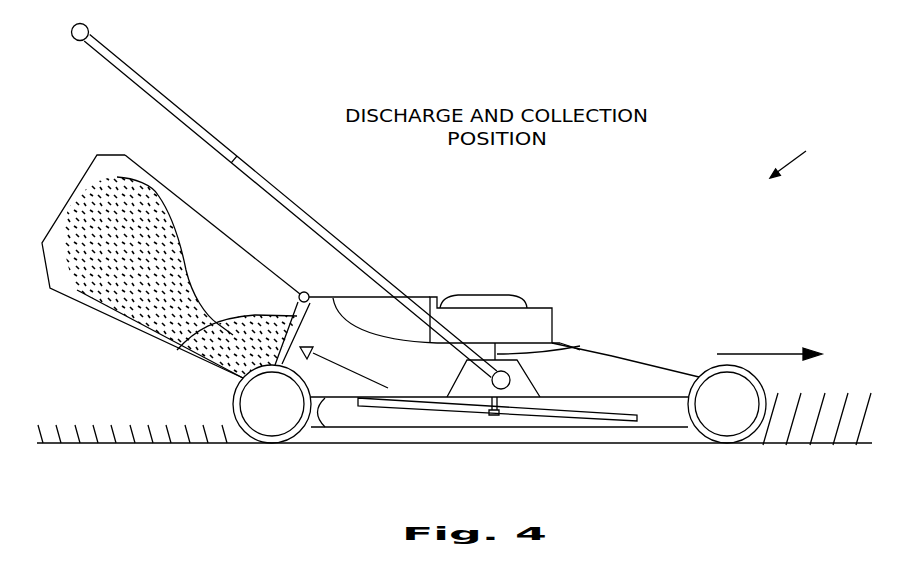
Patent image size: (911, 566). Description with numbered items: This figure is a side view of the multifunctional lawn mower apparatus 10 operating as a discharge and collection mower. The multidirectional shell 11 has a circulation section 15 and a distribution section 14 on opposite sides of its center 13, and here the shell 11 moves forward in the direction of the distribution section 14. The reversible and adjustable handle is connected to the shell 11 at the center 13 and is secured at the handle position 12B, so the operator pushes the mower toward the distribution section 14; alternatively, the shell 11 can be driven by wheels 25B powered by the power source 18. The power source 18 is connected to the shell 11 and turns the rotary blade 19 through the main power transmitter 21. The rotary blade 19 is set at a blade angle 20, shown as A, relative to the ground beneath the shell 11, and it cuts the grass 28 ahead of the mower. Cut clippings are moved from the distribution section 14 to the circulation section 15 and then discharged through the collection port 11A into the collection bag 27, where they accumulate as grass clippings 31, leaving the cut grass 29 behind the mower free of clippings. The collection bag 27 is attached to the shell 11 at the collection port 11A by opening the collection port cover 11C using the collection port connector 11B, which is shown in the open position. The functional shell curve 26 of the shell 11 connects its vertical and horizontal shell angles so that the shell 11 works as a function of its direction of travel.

The multifunctional lawn mower apparatus 10 is at (802, 156).
The multidirectional shell 11 is at (612, 356).
The collection port 11A is at (183, 349).
The collection port connector 11B is at (303, 292).
The collection port cover 11C is at (250, 253).
The handle position 12B is at (112, 52).
The center 13 is at (580, 376).
The distribution section 14 is at (586, 352).
The circulation section 15 is at (315, 337).
The power source 18 is at (481, 294).
The rotary blade 19 is at (597, 423).
The blade angle 20 is at (312, 402).
The main power transmitter 21 is at (500, 404).
The wheels 25B is at (272, 437).
The functional shell curve 26 is at (370, 333).
The collection bag 27 is at (115, 155).
The grass 28 is at (813, 393).
The cut grass 29 is at (150, 425).
The grass clippings 31 is at (128, 250).
The blade angle symbol A is at (331, 412).